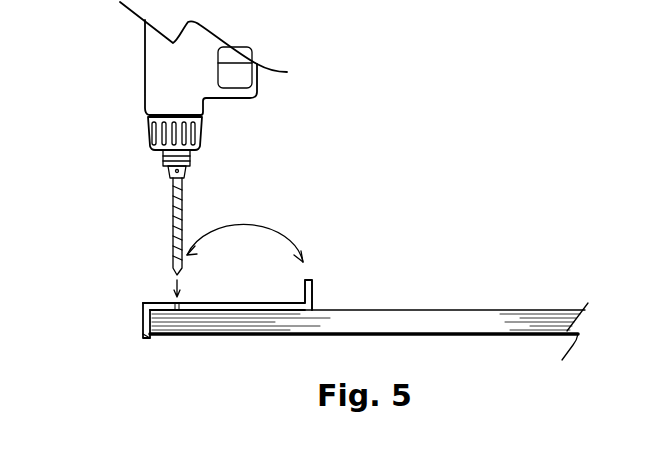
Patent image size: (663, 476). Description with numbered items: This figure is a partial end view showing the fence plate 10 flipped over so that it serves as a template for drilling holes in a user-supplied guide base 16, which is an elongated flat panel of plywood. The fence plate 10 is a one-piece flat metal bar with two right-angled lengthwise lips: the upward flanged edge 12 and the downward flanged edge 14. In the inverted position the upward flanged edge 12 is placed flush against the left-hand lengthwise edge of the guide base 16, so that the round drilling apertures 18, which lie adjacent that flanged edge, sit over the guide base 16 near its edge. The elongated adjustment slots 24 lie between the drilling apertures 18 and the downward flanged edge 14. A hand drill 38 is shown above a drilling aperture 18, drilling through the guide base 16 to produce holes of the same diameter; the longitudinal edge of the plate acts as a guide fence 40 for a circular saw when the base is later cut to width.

The hand drill 38 is at (153, 77).
The fence plate 10 is at (160, 304).
The guide fence 40 is at (146, 314).
The upward flanged edge 12 is at (143, 339).
The drilling apertures 18 is at (178, 311).
The adjustment slots 24 is at (245, 306).
The downward flanged edge 14 is at (313, 280).
The guide base 16 is at (462, 310).